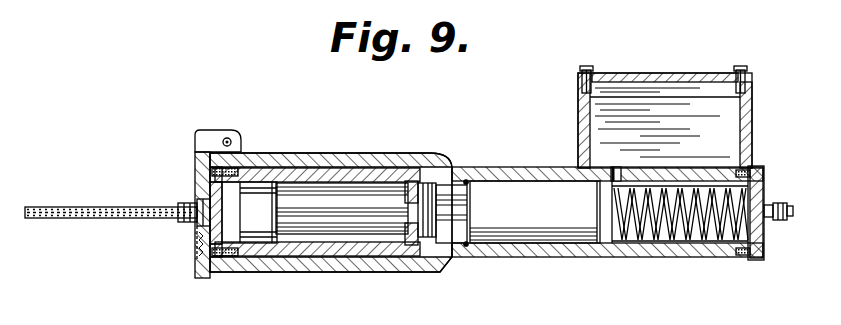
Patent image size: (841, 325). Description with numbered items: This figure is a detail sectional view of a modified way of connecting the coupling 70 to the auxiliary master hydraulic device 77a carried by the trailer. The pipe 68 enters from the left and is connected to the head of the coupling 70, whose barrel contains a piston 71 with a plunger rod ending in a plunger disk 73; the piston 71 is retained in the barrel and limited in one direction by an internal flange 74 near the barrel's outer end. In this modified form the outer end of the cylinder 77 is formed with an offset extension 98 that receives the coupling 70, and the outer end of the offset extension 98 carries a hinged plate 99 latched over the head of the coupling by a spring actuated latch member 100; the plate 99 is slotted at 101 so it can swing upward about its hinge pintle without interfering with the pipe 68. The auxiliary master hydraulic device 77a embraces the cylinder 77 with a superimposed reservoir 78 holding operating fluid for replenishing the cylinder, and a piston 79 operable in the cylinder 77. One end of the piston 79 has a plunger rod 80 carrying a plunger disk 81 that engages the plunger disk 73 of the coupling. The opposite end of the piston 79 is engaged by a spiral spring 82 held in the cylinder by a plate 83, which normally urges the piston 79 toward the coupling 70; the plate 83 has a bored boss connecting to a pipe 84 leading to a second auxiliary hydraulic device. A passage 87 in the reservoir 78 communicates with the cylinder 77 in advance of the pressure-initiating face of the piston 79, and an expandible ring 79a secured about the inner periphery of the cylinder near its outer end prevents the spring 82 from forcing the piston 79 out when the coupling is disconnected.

The pipe 68 is at (90, 219).
The coupling 70 is at (341, 174).
The piston 71 is at (254, 184).
The plunger disk 73 is at (421, 245).
The flange 74 is at (410, 230).
The cylinder 77 is at (523, 258).
The auxiliary master hydraulic device 77a is at (578, 115).
The reservoir 78 is at (713, 125).
The piston 79 is at (533, 190).
The expandible ring 79a is at (476, 247).
The plunger rod 80 is at (452, 222).
The plunger disk 81 is at (447, 183).
The spiral spring 82 is at (662, 235).
The plate 83 is at (753, 258).
The pipe 84 is at (792, 218).
The passage 87 is at (619, 178).
The offset extension 98 is at (324, 258).
The plate 99 is at (209, 161).
The spring actuated latch member 100 is at (196, 262).
The slot 101 is at (203, 232).